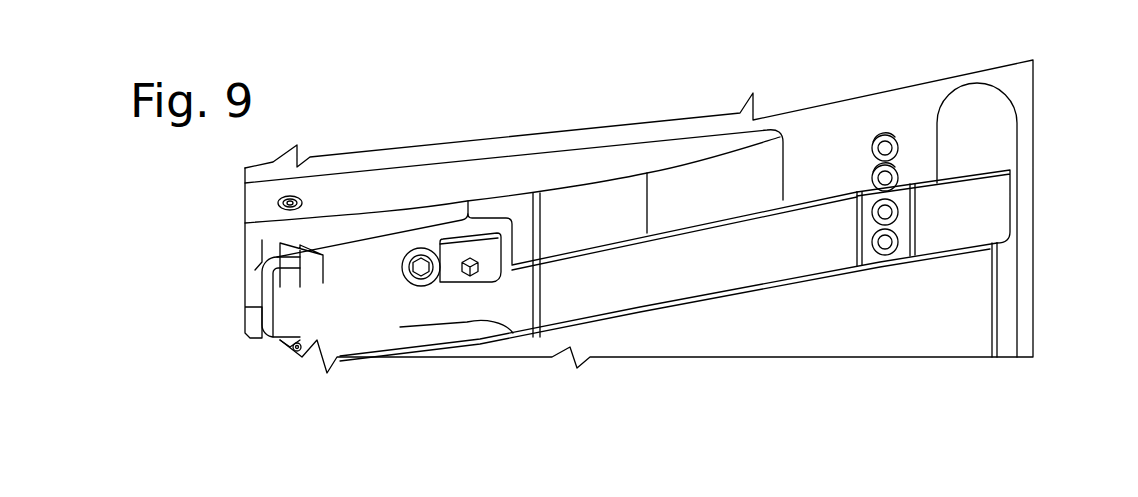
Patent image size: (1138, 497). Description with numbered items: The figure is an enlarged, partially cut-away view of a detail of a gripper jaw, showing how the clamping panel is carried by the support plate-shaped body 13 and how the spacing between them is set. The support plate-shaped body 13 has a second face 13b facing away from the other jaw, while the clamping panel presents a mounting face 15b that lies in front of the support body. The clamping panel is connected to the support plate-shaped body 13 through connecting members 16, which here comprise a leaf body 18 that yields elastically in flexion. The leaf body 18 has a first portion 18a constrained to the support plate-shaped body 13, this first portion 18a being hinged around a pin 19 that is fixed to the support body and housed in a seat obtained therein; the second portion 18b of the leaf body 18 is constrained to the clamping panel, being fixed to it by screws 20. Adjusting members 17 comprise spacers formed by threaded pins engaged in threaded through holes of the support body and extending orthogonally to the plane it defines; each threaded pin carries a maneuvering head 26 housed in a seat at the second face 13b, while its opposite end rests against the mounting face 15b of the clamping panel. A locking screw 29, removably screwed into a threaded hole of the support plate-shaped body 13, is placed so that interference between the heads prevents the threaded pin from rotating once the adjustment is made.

The support plate-shaped body 13 is at (258, 208).
The second face 13b is at (262, 240).
The mounting face 15b is at (1027, 92).
The connecting members 16 is at (786, 292).
The adjusting members 17 is at (430, 305).
The leaf body 18 is at (697, 305).
The first portion 18a is at (303, 340).
The second portion 18b is at (963, 230).
The pin 19 is at (296, 258).
The screws 20 is at (887, 213).
The maneuvering head 26 is at (465, 282).
The locking screw 29 is at (412, 285).